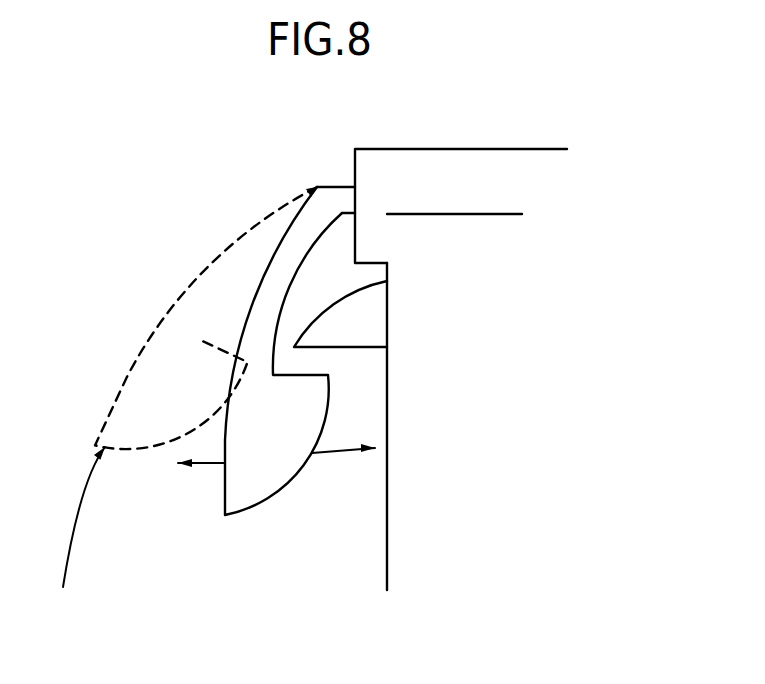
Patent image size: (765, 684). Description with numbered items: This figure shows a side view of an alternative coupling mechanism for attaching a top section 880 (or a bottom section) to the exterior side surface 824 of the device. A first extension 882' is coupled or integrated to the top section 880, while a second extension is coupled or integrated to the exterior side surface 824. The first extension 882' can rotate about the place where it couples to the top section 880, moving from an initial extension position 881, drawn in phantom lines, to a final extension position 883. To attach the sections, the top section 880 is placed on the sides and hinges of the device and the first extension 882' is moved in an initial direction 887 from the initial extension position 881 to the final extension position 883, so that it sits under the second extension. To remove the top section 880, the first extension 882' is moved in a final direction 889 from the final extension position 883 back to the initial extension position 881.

The top section 880 is at (462, 180).
The exterior side surface 824 is at (460, 456).
The first extension 882' is at (215, 321).
The final extension position 883 is at (255, 511).
The initial direction 887 is at (327, 453).
The final direction 889 is at (207, 465).
The initial extension position 881 is at (74, 535).